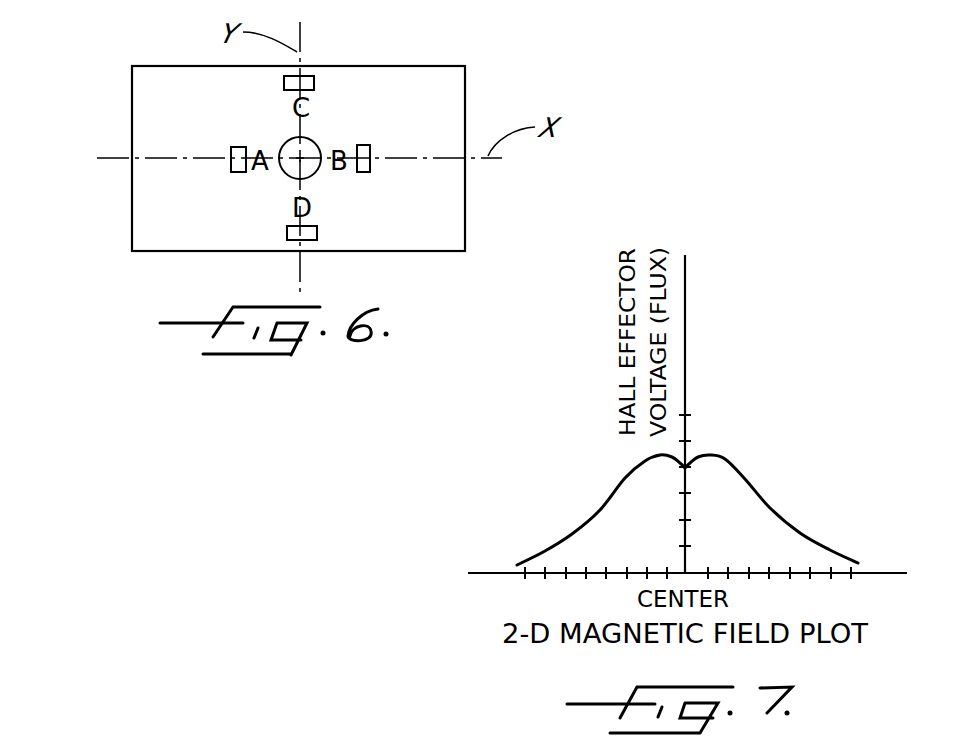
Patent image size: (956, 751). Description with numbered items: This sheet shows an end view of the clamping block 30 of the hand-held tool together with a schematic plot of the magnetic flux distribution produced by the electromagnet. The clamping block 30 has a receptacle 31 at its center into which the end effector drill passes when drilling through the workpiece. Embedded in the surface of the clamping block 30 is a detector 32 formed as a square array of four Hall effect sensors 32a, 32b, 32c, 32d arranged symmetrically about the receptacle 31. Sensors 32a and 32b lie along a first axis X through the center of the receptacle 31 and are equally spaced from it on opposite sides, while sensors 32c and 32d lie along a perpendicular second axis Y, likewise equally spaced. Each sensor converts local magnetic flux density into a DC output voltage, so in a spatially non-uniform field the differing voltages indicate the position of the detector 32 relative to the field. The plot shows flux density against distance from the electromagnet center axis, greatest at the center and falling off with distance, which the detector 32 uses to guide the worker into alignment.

The clamping block 30 is at (147, 132).
The receptacle 31 is at (283, 147).
The detector 32 is at (460, 86).
The Hall effect sensor 32a is at (231, 166).
The Hall effect sensor 32b is at (370, 164).
The Hall effect sensor 32c is at (315, 79).
The Hall effect sensor 32d is at (308, 239).